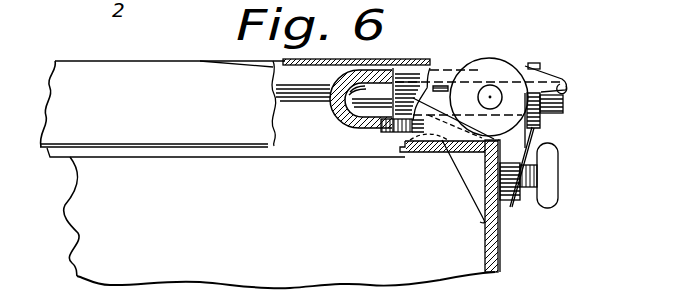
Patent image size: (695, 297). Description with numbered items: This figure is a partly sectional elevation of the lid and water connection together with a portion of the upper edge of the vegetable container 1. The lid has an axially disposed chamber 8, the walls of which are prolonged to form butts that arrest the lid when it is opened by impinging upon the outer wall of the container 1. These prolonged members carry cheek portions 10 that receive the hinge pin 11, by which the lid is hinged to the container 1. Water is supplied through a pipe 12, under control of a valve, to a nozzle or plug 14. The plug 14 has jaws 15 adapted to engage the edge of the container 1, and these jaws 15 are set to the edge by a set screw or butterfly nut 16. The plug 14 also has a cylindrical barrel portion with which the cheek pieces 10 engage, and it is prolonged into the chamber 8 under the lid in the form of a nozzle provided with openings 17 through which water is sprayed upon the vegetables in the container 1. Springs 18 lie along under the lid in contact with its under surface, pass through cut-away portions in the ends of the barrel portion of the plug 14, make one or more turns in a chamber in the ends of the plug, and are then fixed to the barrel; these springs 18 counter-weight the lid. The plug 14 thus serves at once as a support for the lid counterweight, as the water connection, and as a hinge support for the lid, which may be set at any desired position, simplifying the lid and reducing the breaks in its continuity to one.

The container 1 is at (498, 262).
The axially disposed chamber 8 is at (344, 66).
The cheek portions 10 is at (507, 70).
The hinge pin 11 is at (487, 99).
The pipe 12 is at (568, 100).
The nozzle or plug 14 is at (410, 76).
The jaws 15 is at (468, 182).
The set screw or butterfly nut 16 is at (547, 177).
The openings 17 is at (361, 99).
The springs 18 is at (449, 86).